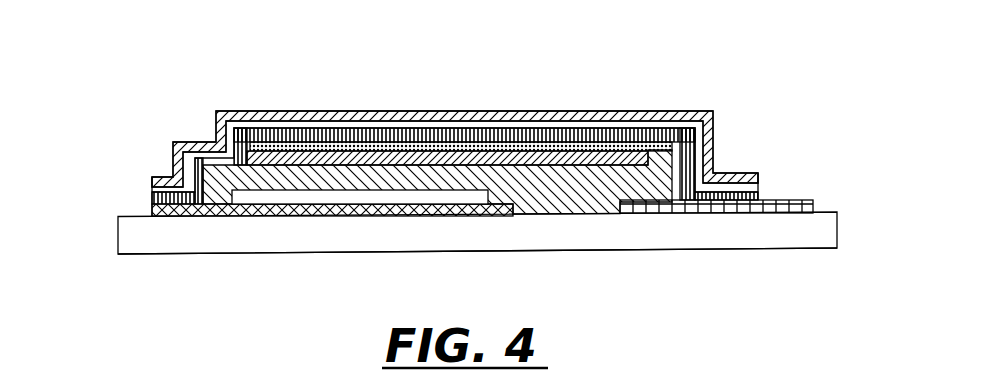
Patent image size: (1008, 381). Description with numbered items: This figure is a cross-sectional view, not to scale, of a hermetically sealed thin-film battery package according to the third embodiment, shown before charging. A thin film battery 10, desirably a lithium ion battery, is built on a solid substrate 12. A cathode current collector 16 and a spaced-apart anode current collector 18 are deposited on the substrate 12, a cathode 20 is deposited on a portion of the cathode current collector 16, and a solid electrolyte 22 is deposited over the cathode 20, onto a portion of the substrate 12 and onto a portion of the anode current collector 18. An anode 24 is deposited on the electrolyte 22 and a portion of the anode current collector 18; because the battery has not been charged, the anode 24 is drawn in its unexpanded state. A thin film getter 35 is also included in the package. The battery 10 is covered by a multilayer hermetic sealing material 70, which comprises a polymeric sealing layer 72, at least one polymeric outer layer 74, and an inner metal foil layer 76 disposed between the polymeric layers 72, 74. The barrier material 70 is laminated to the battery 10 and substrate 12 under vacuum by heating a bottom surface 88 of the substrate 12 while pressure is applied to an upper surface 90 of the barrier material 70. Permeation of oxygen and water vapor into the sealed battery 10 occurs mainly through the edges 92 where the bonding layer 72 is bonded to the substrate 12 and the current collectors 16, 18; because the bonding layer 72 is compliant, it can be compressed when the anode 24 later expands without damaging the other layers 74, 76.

The thin film battery 10 is at (610, 143).
The substrate 12 is at (437, 248).
The cathode current collector 16 is at (153, 216).
The anode current collector 18 is at (783, 207).
The cathode 20 is at (273, 206).
The solid electrolyte 22 is at (589, 201).
The anode 24 is at (498, 164).
The thin film getter 35 is at (572, 138).
The multilayer hermetic sealing material 70 is at (726, 113).
The polymeric sealing layer 72 is at (403, 133).
The polymeric outer layer 74 is at (365, 112).
The inner metal foil layer 76 is at (477, 125).
The bottom surface 88 is at (350, 262).
The upper surface 90 is at (237, 104).
The edges 92 is at (139, 187).